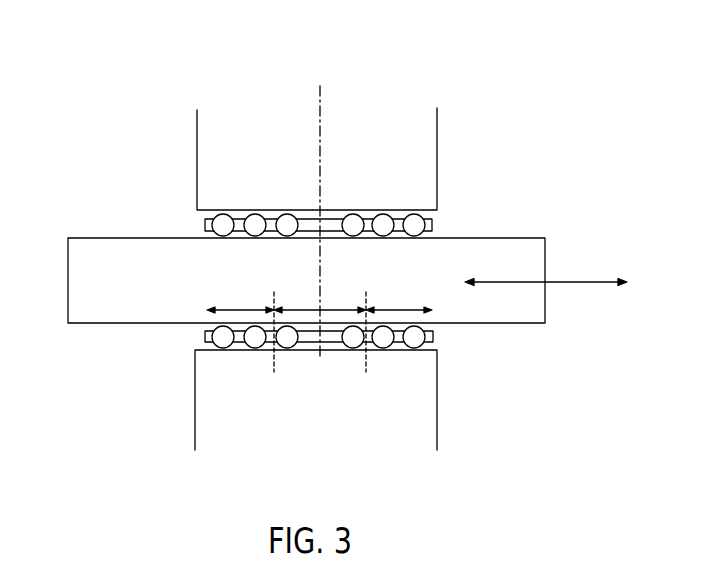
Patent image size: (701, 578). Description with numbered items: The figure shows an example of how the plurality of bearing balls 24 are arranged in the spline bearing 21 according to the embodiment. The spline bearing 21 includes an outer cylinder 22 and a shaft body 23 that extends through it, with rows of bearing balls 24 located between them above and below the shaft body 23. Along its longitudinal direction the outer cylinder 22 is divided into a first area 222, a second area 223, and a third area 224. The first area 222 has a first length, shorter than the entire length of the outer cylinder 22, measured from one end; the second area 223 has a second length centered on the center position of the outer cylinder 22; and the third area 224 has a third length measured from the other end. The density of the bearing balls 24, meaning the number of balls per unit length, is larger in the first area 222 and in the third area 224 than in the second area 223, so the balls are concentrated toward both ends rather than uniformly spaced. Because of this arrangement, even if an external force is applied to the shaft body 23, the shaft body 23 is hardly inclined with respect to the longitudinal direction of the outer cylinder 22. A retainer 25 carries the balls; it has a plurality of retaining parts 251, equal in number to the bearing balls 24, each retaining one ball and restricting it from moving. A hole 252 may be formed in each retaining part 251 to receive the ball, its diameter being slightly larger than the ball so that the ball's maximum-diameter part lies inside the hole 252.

The spline bearing 21 is at (64, 44).
The outer cylinder 22 is at (417, 132).
The shaft body 23 is at (530, 257).
The bearing ball 24 is at (415, 225).
The retainer 25 is at (335, 213).
The retaining part 251 is at (207, 223).
The hole 252 is at (212, 220).
The first area 222 is at (275, 368).
The second area 223 is at (365, 368).
The third area 224 is at (430, 368).